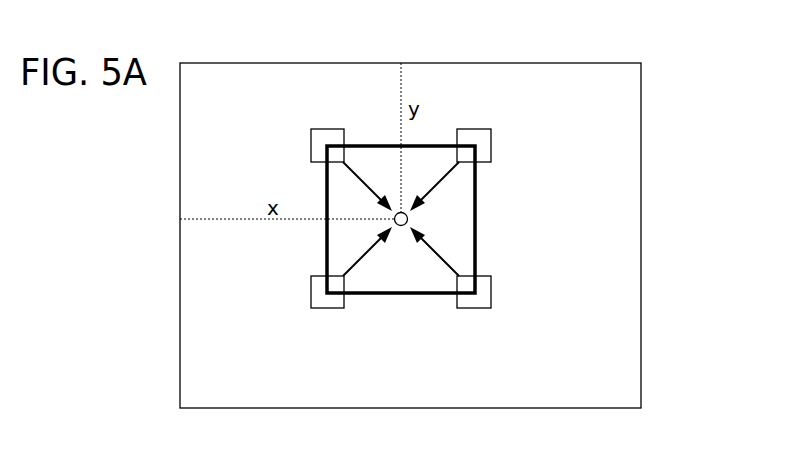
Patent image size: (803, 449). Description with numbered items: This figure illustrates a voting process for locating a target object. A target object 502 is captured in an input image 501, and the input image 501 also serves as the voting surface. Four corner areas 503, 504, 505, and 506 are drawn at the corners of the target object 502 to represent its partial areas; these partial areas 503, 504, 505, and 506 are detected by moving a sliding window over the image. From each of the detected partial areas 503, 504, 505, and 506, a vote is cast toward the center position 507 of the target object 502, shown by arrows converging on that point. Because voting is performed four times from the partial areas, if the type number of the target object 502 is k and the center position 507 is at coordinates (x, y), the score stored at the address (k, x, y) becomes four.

The input image 501 is at (641, 115).
The target object 502 is at (476, 222).
The corner area 503 is at (323, 128).
The corner area 504 is at (485, 129).
The corner area 505 is at (320, 309).
The corner area 506 is at (481, 310).
The center position 507 is at (407, 218).